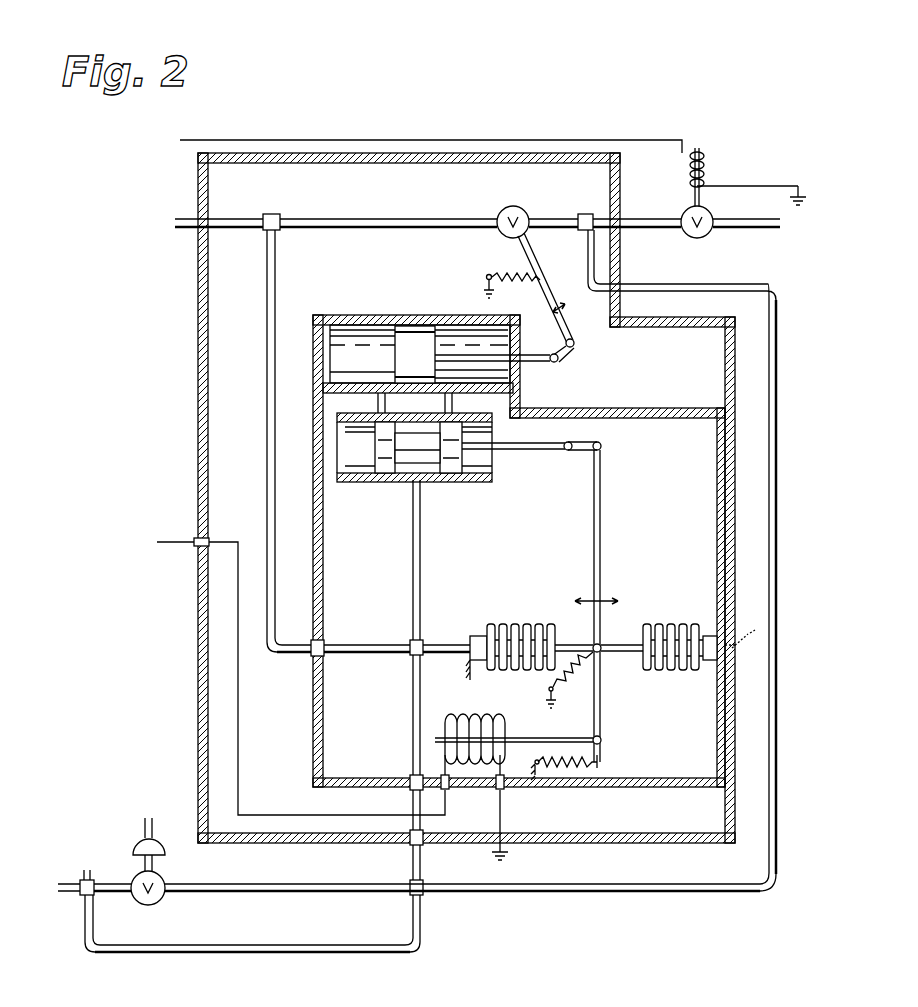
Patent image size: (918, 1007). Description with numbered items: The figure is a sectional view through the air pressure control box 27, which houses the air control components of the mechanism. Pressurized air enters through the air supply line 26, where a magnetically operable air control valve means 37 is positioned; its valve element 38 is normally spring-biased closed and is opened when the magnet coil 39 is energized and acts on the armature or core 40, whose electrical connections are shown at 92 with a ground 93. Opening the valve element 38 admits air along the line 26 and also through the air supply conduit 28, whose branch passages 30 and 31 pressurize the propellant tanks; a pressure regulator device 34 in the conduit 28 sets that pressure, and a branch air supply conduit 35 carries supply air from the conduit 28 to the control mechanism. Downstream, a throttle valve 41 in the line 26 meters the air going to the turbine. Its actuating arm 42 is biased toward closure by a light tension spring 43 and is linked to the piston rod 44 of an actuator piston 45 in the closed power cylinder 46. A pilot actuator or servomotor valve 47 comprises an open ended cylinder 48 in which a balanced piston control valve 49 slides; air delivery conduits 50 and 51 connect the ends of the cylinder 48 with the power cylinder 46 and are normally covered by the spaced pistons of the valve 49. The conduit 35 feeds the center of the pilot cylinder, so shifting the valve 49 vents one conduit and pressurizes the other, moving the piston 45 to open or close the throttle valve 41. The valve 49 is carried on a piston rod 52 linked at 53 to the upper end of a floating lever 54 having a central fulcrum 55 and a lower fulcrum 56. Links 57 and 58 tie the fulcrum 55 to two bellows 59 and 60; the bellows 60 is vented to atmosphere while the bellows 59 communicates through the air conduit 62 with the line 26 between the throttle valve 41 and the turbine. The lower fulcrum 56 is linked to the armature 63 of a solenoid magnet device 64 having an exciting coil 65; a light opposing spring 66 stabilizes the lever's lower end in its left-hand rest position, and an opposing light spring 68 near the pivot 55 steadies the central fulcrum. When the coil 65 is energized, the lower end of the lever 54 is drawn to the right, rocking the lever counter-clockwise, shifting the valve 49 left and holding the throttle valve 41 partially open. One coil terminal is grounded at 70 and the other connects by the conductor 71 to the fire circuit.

The air supply line 26 is at (640, 221).
The air pressure control box 27 is at (136, 301).
The air supply conduit 28 is at (600, 896).
The branch passage 30 is at (92, 876).
The branch passage 31 is at (72, 881).
The pressure regulator device 34 is at (174, 871).
The branch air supply conduit 35 is at (421, 520).
The magnetically operable air control valve means 37 is at (723, 171).
The valve element 38 is at (685, 238).
The magnet coil 39 is at (705, 170).
The actuating armature or core 40 is at (700, 192).
The throttle valve 41 is at (522, 214).
The actuating arm 42 is at (538, 262).
The light tension spring 43 is at (508, 284).
The piston rod 44 is at (528, 363).
The actuator piston 45 is at (418, 336).
The closed cylinder 46 is at (375, 326).
The pilot actuator or servomotor valve 47 is at (412, 461).
The open ended cylinder 48 is at (405, 478).
The balanced piston control valve 49 is at (405, 440).
The air delivery conduit 50 is at (378, 405).
The air delivery conduit 51 is at (452, 405).
The piston rod 52 is at (545, 445).
The link 53 is at (603, 446).
The floating lever 54 is at (602, 544).
The central fulcrum point 55 is at (601, 644).
The lower end fulcrum point 56 is at (603, 739).
The link 57 is at (568, 645).
The link 58 is at (614, 654).
The bellows 59 is at (527, 625).
The bellows 60 is at (705, 625).
The air conduit 62 is at (267, 422).
The actuating armature 63 is at (558, 736).
The solenoid magnet device 64 is at (514, 731).
The exciting coil 65 is at (493, 726).
The light opposing spring member 66 is at (570, 758).
The opposing light spring 68 is at (562, 681).
The ground 70 is at (506, 853).
The conductor 71 is at (183, 541).
The electrical lead 92 is at (655, 140).
The ground 93 is at (800, 194).